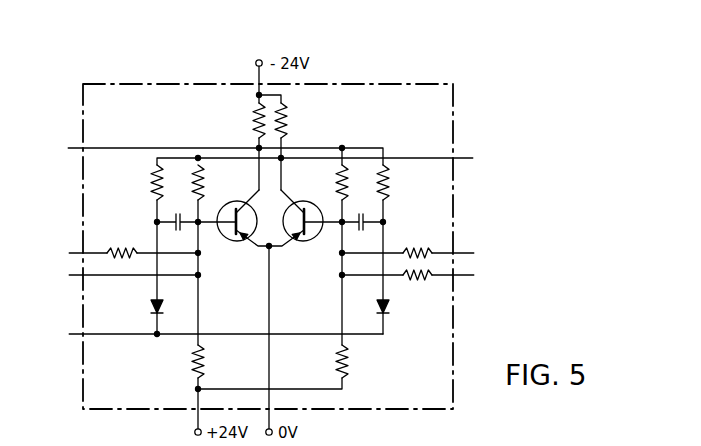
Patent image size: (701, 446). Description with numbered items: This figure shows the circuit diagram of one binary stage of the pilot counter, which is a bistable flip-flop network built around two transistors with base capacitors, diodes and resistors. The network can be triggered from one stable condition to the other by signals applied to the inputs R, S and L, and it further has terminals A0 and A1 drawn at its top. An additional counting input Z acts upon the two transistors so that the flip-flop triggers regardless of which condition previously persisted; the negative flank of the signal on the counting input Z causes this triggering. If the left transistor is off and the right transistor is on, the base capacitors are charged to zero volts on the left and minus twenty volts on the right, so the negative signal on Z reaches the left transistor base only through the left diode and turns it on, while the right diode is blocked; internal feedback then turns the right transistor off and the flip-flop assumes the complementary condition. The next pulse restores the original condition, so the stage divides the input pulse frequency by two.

The address input A0 is at (212, 153).
The address input A1 is at (330, 159).
The reset input R is at (126, 254).
The set input S is at (126, 276).
The counting input Z is at (217, 335).
The input L is at (420, 265).